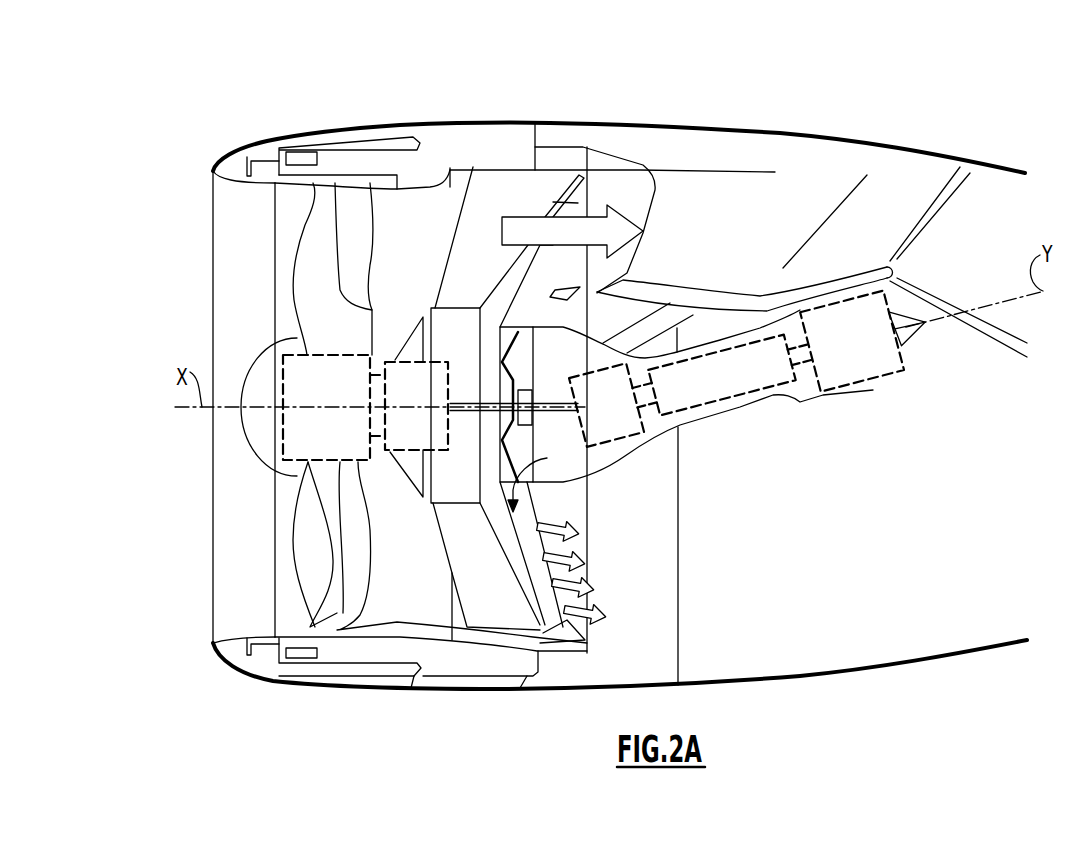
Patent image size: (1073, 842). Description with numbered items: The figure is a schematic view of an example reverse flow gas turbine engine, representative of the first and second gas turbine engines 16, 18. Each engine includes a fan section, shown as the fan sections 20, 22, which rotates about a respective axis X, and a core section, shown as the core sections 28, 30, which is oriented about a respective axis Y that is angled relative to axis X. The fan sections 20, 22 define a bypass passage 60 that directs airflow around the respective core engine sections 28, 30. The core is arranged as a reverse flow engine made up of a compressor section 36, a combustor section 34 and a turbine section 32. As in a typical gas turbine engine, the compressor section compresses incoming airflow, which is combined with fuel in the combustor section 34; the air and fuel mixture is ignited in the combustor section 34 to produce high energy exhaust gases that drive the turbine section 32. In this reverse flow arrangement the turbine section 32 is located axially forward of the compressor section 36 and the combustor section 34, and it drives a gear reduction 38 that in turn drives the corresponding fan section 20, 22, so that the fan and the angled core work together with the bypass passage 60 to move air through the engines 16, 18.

The first gas turbine engine 16 is at (620, 377).
The second gas turbine engine 18 is at (845, 109).
The fan section 20 is at (367, 410).
The fan section 22 is at (256, 559).
The core section 28 is at (790, 479).
The core section 30 is at (790, 479).
The turbine section 32 is at (607, 432).
The combustor section 34 is at (707, 390).
The compressor section 36 is at (843, 365).
The gear reduction 38 is at (407, 420).
The bypass passage 60 is at (547, 237).